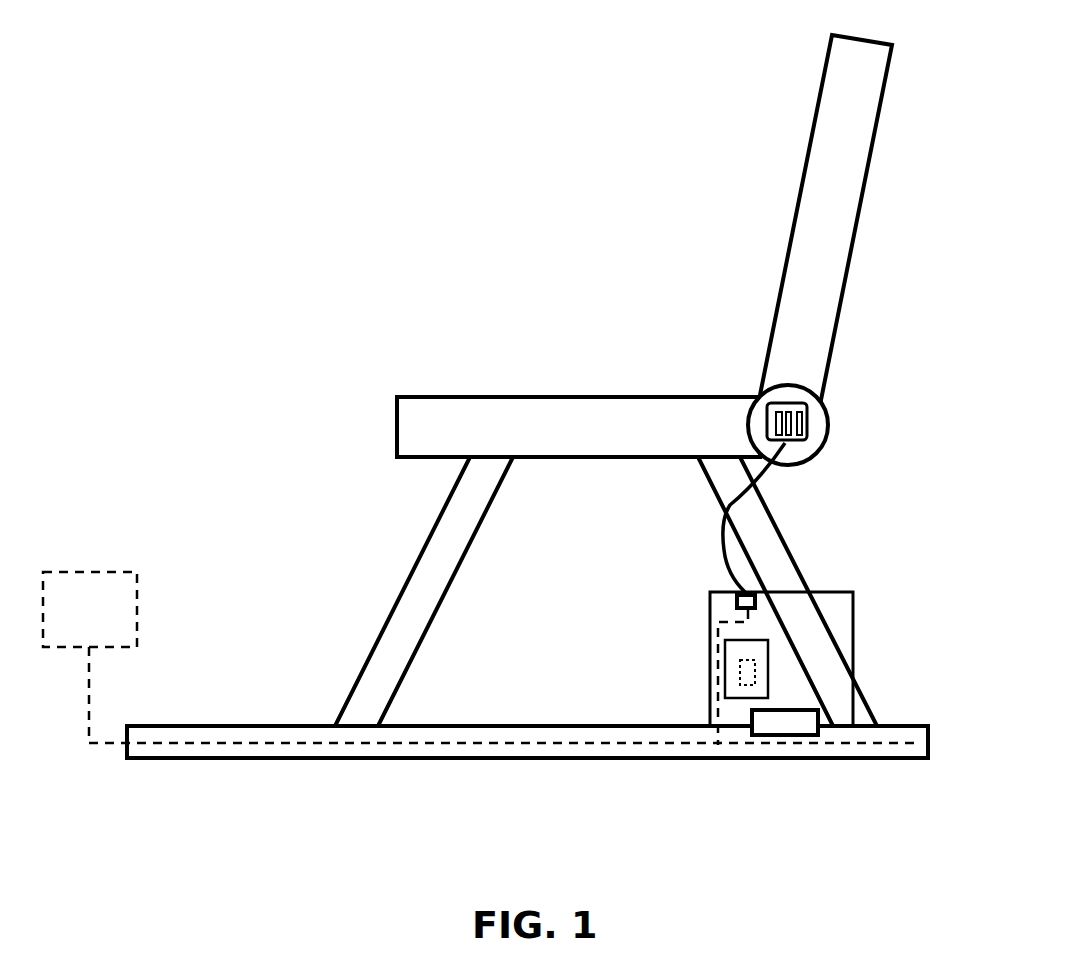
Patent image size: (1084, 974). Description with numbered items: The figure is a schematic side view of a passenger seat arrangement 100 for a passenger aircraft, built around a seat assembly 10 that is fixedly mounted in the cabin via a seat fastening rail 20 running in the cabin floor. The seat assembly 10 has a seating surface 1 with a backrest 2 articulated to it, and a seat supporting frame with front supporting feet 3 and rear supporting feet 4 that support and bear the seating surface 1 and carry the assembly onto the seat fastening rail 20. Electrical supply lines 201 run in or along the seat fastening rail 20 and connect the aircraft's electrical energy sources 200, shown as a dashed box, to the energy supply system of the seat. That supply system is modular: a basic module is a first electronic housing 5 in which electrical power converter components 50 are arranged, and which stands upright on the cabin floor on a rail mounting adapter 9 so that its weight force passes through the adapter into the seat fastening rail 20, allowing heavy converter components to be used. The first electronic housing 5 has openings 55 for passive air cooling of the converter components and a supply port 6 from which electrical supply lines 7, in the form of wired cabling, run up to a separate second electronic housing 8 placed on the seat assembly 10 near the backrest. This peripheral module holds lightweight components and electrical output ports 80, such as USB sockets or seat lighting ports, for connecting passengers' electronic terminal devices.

The passenger seat arrangement 100 is at (593, 131).
The seat assembly 10 is at (655, 333).
The seating surface 1 is at (407, 427).
The backrest 2 is at (830, 263).
The front supporting feet 3 is at (397, 632).
The rear supporting feet 4 is at (722, 487).
The first electronic housing 5 is at (853, 620).
The supply port 6 is at (710, 603).
The electrical supply lines 7 is at (760, 480).
The second electronic housing 8 is at (828, 413).
The electrical output ports 80 is at (805, 437).
The rail mounting adapter 9 is at (752, 718).
The seat fastening rails 20 is at (187, 730).
The electrical power converter components 50 is at (740, 668).
The openings 55 is at (755, 670).
The electrical energy sources 200 is at (90, 609).
The electrical supply lines 201 is at (405, 743).